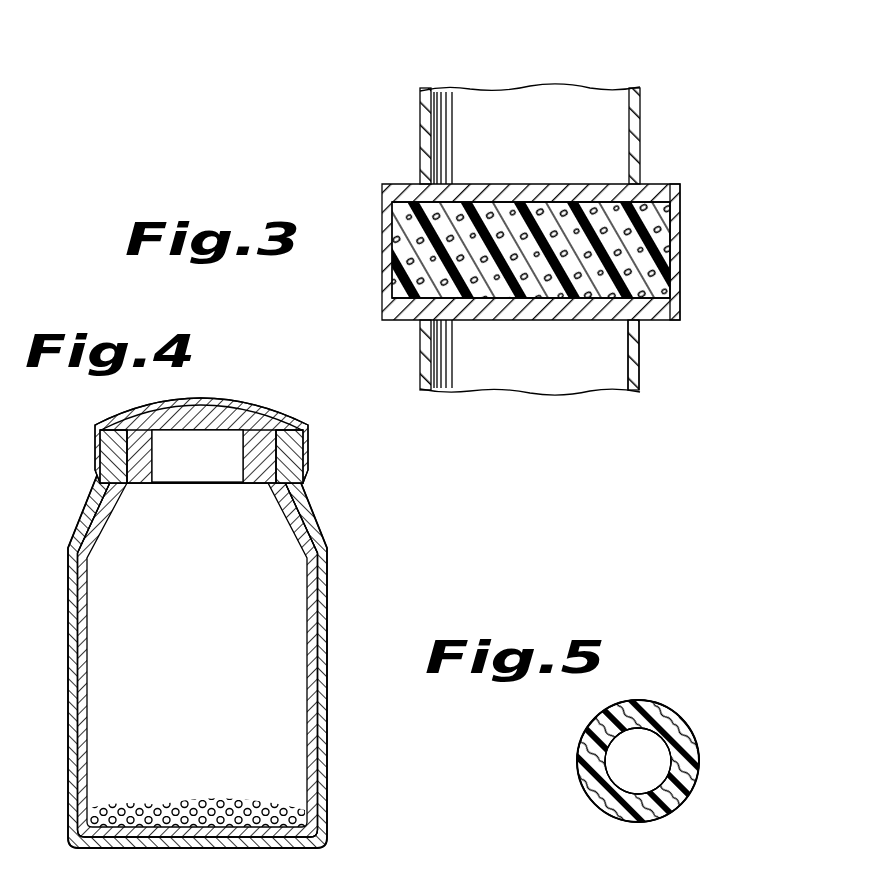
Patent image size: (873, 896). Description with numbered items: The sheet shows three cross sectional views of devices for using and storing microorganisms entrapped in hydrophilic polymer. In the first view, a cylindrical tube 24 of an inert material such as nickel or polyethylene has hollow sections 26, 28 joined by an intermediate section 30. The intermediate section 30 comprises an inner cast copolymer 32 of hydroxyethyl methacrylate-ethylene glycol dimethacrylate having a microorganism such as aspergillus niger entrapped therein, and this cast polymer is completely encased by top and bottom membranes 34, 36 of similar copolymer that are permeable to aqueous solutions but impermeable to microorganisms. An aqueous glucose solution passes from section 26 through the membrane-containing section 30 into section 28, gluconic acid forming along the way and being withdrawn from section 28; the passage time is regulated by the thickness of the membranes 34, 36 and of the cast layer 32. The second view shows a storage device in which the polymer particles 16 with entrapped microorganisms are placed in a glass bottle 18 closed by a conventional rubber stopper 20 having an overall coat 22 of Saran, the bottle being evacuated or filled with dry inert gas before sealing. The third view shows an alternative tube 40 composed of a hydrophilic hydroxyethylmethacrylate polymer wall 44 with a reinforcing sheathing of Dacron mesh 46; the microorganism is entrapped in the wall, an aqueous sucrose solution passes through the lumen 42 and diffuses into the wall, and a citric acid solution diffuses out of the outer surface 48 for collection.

In FIG. 4, the particles 16 is at (248, 802).
In FIG. 4, the glass bottle 18 is at (312, 567).
In FIG. 4, the rubber stopper 20 is at (222, 400).
In FIG. 4, the overall coat of Saran 22 is at (318, 631).
In FIG. 3, the cylindrical tube 24 is at (655, 354).
In FIG. 3, the hollow section 26 is at (550, 368).
In FIG. 3, the hollow section 28 is at (598, 122).
In FIG. 3, the intermediate section 30 is at (382, 240).
In FIG. 3, the cast copolymer 32 is at (655, 220).
In FIG. 3, the top membrane 34 is at (462, 197).
In FIG. 3, the bottom membrane 36 is at (498, 300).
In FIG. 5, the tube 40 is at (576, 773).
In FIG. 5, the lumen 42 is at (652, 776).
In FIG. 5, the hydrophilic hydroxyethylmethacrylate polymer wall 44 is at (673, 712).
In FIG. 5, the Dacron mesh 46 is at (690, 742).
In FIG. 5, the outer surface 48 is at (588, 731).